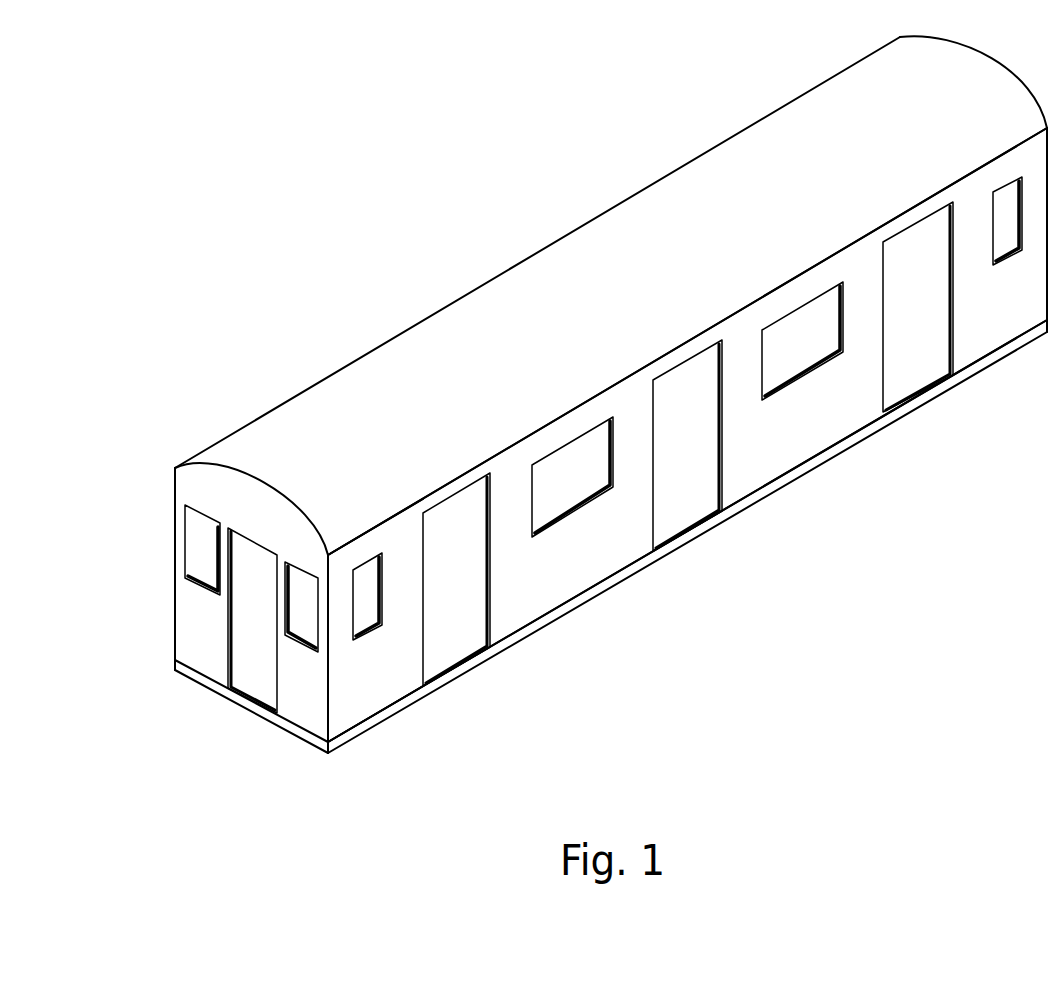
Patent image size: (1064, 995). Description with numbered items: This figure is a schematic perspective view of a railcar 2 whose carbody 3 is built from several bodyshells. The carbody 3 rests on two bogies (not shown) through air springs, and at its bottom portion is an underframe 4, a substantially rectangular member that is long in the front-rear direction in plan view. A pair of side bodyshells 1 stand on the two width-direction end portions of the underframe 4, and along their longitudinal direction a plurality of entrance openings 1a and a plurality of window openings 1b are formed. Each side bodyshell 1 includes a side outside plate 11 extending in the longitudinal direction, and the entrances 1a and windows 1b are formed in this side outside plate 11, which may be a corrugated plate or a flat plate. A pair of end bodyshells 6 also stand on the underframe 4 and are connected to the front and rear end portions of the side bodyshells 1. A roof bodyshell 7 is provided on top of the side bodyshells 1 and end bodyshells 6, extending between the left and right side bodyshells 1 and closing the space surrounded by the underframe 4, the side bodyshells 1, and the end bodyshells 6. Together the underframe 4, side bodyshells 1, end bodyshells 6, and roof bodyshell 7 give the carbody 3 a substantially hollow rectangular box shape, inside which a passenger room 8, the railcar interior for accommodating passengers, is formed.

The side bodyshell 1 is at (543, 602).
The entrance opening 1a is at (457, 648).
The window opening 1b is at (372, 625).
The railcar 2 is at (237, 364).
The carbody 3 is at (611, 295).
The underframe 4 is at (375, 720).
The end bodyshell 6 is at (302, 717).
The roof bodyshell 7 is at (405, 348).
The passenger room 8 is at (445, 562).
The side outside plate 11 is at (797, 453).